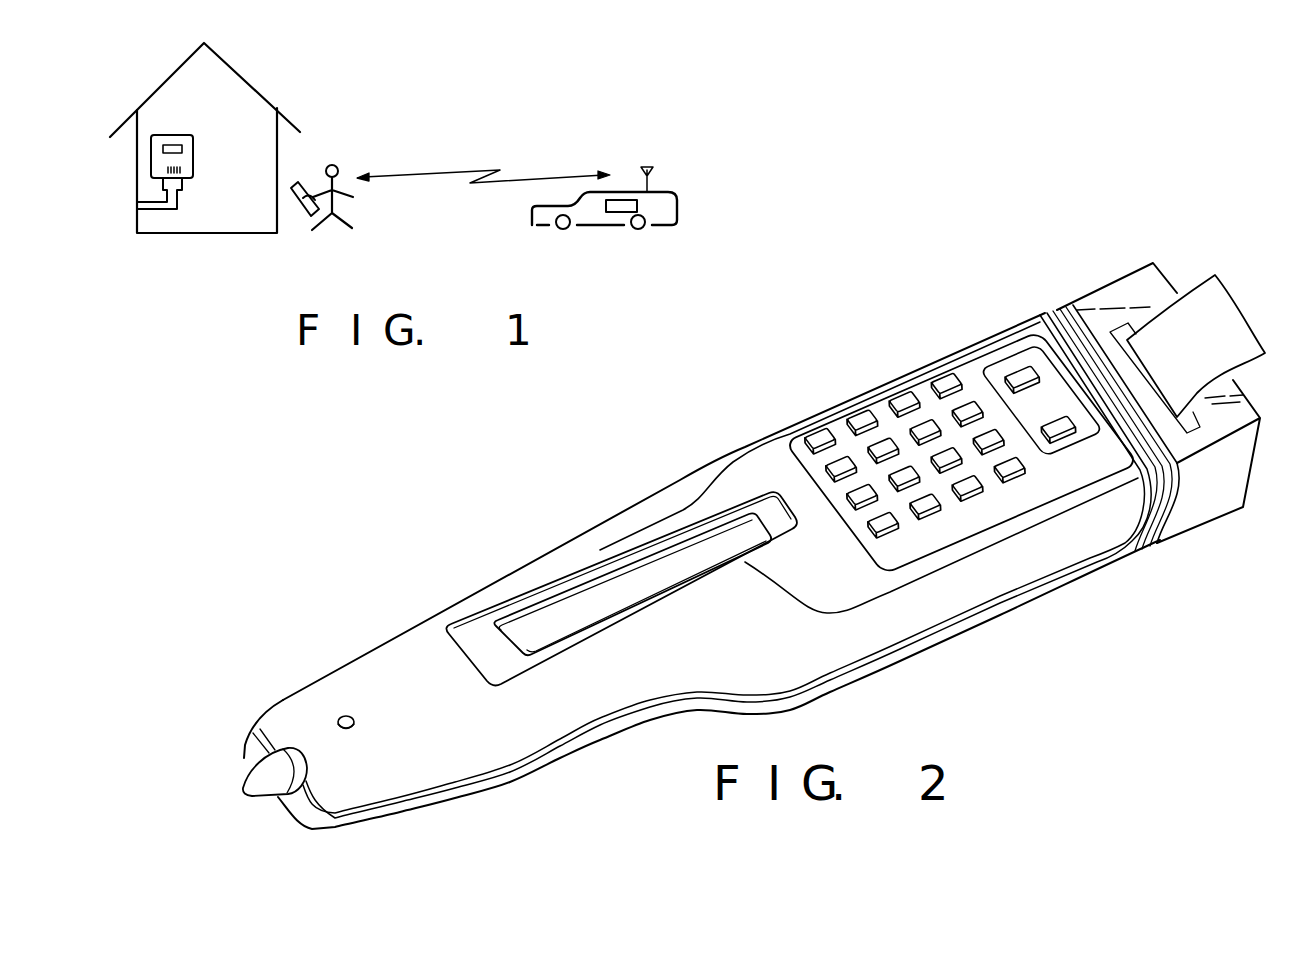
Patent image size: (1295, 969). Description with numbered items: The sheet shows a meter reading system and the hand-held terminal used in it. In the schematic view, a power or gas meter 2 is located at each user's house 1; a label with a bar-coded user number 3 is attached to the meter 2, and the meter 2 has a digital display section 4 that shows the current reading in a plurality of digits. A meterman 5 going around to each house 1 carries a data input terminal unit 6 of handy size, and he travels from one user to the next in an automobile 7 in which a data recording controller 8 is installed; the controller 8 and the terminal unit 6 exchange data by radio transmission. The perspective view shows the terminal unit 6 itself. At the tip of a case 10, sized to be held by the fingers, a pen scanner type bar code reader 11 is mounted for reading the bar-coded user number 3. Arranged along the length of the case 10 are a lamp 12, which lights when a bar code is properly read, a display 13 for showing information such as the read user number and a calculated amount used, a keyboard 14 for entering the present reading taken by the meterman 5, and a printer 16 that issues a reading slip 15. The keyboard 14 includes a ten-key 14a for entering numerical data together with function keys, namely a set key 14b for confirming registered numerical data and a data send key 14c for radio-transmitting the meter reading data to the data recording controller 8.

In FIG. 1, the user's house 1 is at (155, 91).
In FIG. 1, the power or gas meter 2 is at (193, 147).
In FIG. 1, the bar-coded user number 3 is at (193, 170).
In FIG. 1, the digital display section 4 is at (163, 148).
In FIG. 1, the meterman 5 is at (336, 165).
In FIG. 1, the data input terminal unit 6 is at (304, 217).
In FIG. 2, the data input terminal unit 6 is at (527, 500).
In FIG. 1, the automobile 7 is at (678, 203).
In FIG. 1, the data recording controller 8 is at (616, 207).
In FIG. 2, the case 10 is at (729, 527).
In FIG. 2, the pen scanner type bar code reader 11 is at (251, 773).
In FIG. 2, the lamp 12 is at (356, 724).
In FIG. 2, the display 13 is at (638, 572).
In FIG. 2, the keyboard 14 is at (961, 441).
In FIG. 2, the ten-key 14a is at (915, 455).
In FIG. 2, the set key 14b is at (967, 488).
In FIG. 2, the data send key 14c is at (978, 362).
In FIG. 2, the reading slip 15 is at (1205, 298).
In FIG. 2, the printer 16 is at (1110, 300).